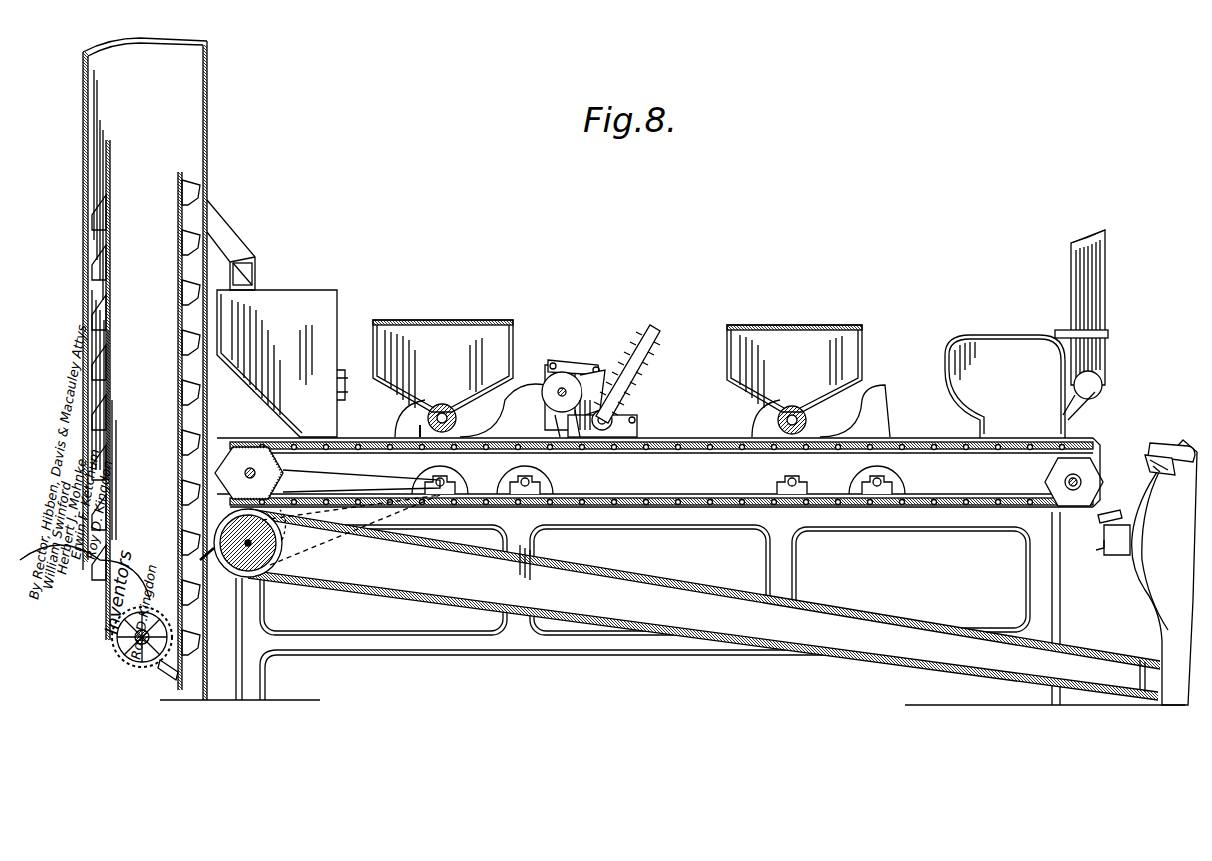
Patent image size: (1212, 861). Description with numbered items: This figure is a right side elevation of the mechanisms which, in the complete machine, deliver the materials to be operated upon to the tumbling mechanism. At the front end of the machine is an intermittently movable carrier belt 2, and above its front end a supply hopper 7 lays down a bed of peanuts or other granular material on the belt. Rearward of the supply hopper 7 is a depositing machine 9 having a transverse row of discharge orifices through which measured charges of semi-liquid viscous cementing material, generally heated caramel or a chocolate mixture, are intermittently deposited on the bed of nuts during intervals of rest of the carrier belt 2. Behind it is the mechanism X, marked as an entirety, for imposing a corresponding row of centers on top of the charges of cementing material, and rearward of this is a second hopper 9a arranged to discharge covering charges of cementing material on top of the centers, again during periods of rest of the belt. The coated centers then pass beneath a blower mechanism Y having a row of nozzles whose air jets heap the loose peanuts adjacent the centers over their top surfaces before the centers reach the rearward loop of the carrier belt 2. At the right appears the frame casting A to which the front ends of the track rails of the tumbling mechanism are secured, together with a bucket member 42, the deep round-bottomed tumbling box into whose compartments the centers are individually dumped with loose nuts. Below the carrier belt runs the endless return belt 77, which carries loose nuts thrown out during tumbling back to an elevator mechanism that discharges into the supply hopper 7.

The supply hopper 7 is at (335, 330).
The carrier belt 2 is at (948, 450).
The depositing machine 9 is at (412, 398).
The second hopper 9a is at (748, 395).
The center-imposing mechanism X is at (583, 356).
The blower mechanism Y is at (1023, 332).
The endless return belt 77 is at (628, 576).
The frame casting A is at (1133, 590).
The bucket member 42 is at (1150, 460).